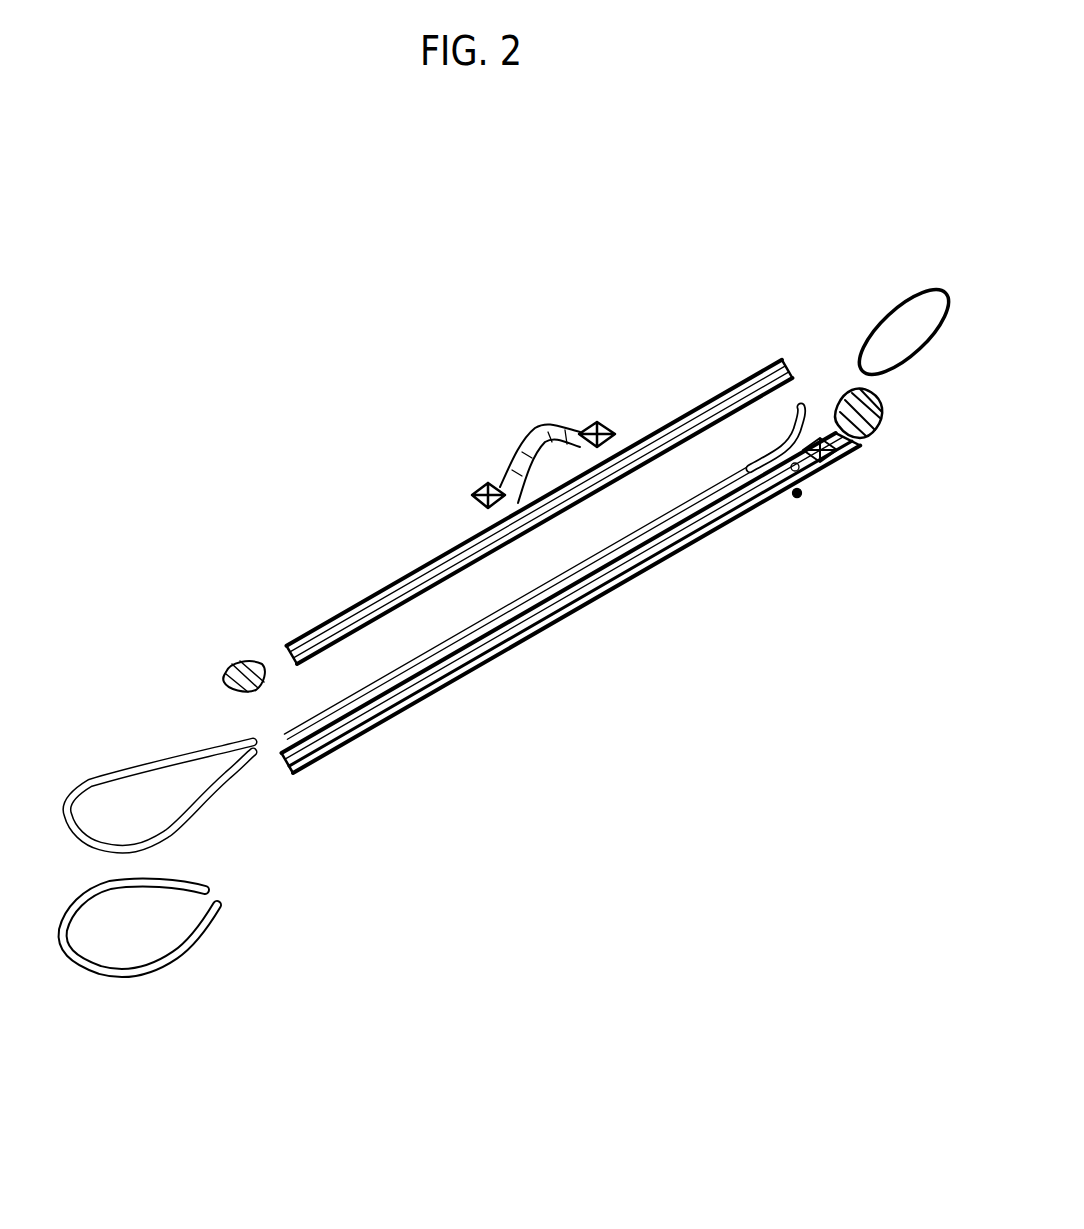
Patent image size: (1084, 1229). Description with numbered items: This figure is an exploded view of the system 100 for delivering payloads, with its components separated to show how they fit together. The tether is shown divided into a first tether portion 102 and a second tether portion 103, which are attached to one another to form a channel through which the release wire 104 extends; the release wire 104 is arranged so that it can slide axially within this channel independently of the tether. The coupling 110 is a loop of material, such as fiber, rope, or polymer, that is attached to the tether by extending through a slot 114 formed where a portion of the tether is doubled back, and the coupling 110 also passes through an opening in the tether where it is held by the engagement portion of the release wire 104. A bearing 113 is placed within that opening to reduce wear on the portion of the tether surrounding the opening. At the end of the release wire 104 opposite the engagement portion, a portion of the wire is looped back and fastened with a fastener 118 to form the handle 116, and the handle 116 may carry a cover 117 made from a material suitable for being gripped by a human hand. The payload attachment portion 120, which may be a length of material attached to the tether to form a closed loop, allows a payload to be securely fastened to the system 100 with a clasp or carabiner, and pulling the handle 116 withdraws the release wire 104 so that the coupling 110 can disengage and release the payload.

The system 100 is at (316, 392).
The first tether portion 102 is at (332, 758).
The second tether portion 103 is at (310, 622).
The release wire 104 is at (712, 480).
The coupling 110 is at (888, 303).
The bearing 113 is at (800, 500).
The slot 114 is at (872, 438).
The handle 116 is at (125, 767).
The cover 117 is at (150, 978).
The fastener 118 is at (233, 660).
The payload attachment portion 120 is at (533, 420).